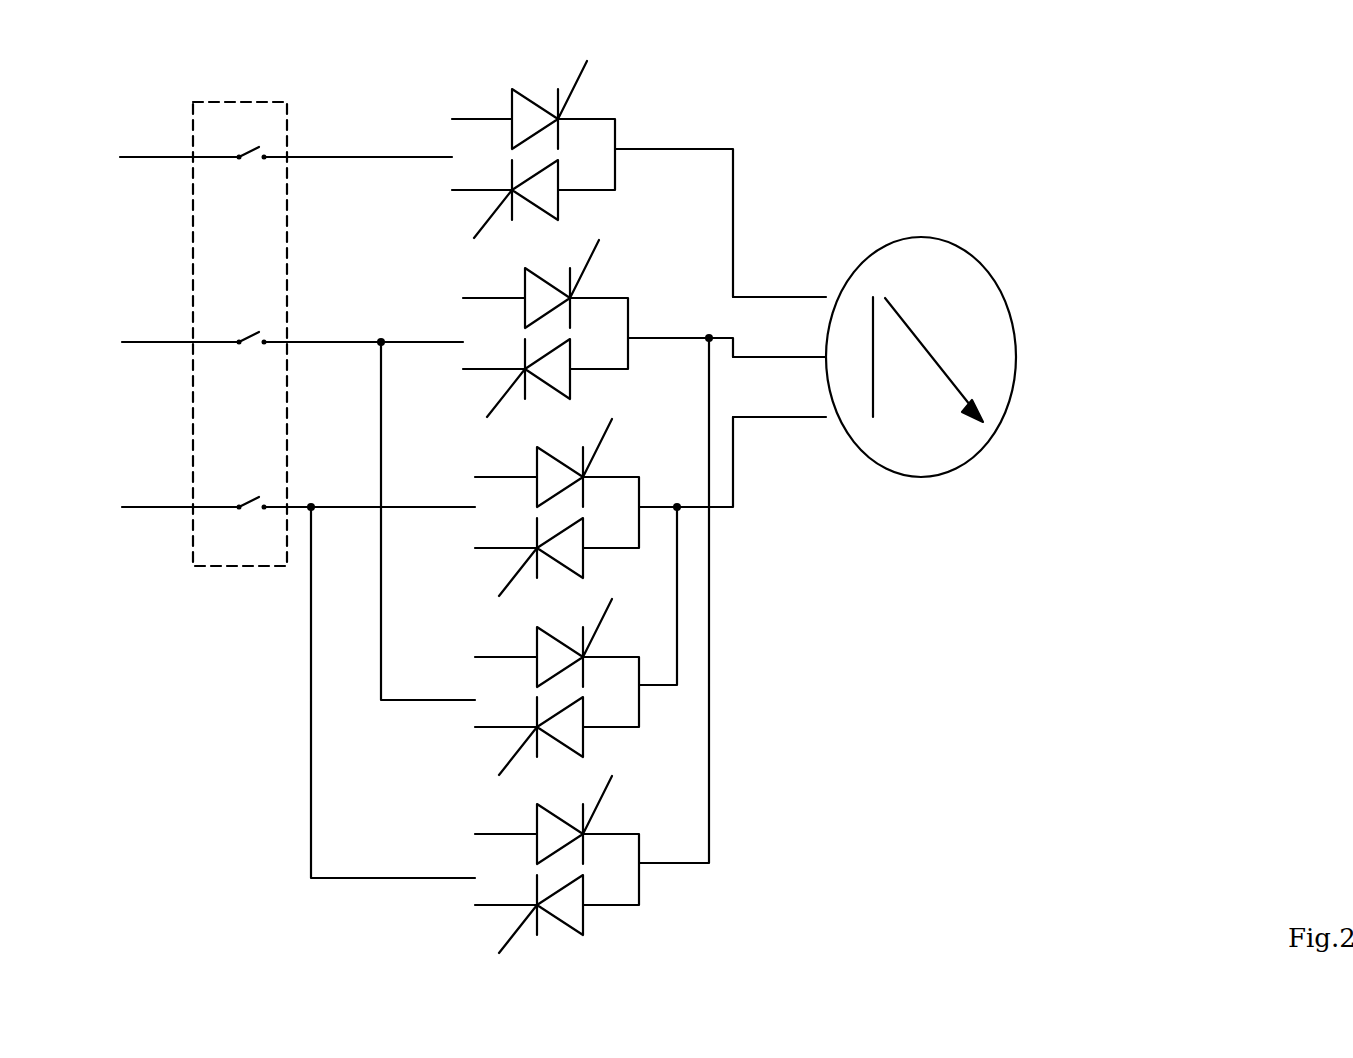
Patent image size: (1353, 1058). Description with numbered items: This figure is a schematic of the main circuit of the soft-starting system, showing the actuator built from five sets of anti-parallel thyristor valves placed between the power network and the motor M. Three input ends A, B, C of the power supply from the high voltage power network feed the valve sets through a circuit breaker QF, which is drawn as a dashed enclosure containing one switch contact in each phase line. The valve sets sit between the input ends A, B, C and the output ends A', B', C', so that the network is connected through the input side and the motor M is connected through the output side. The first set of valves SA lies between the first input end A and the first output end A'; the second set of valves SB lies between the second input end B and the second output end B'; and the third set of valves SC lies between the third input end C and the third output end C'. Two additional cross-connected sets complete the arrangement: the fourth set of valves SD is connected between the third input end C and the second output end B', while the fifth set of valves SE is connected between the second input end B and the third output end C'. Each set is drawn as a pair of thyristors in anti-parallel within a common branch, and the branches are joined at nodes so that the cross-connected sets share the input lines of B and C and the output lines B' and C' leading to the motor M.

The circuit breaker QF is at (240, 334).
The first input end A is at (286, 141).
The second input end B is at (292, 323).
The third input end C is at (298, 501).
The first set of valves SA is at (533, 145).
The second set of valves SB is at (545, 328).
The third set of valves SC is at (557, 507).
The fourth set of valves SD is at (557, 864).
The fifth set of valves SE is at (557, 687).
The first output end A' is at (779, 268).
The second output end B' is at (779, 335).
The third output end C' is at (779, 392).
The motor M is at (921, 357).